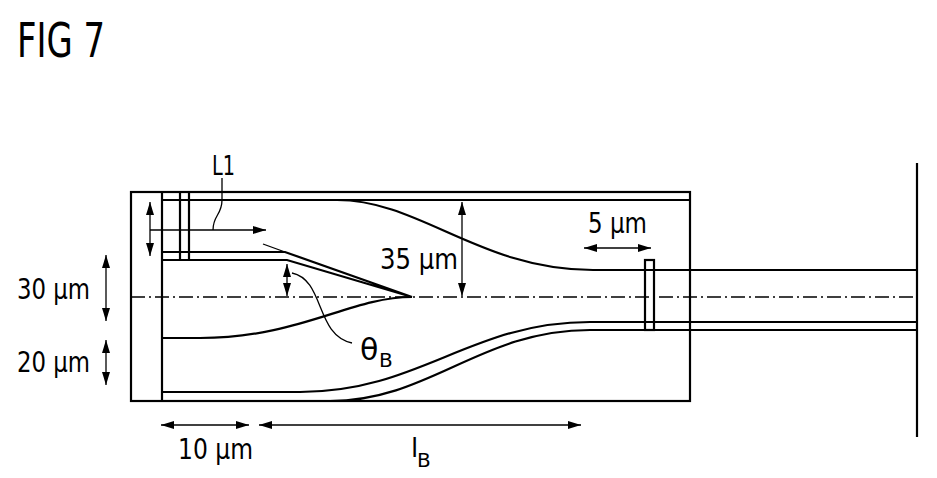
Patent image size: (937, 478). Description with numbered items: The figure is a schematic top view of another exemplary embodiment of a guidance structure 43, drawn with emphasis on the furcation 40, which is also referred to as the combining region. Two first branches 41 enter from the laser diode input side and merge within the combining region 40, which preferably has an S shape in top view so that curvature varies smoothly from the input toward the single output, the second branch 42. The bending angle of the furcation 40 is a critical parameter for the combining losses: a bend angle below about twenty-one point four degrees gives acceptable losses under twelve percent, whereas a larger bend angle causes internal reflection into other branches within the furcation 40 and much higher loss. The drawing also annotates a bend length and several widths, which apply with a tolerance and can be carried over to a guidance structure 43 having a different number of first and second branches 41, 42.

The furcation 40 is at (408, 191).
The first branch 41 is at (171, 363).
The second branch 42 is at (843, 332).
The guidance structure 43 is at (840, 127).